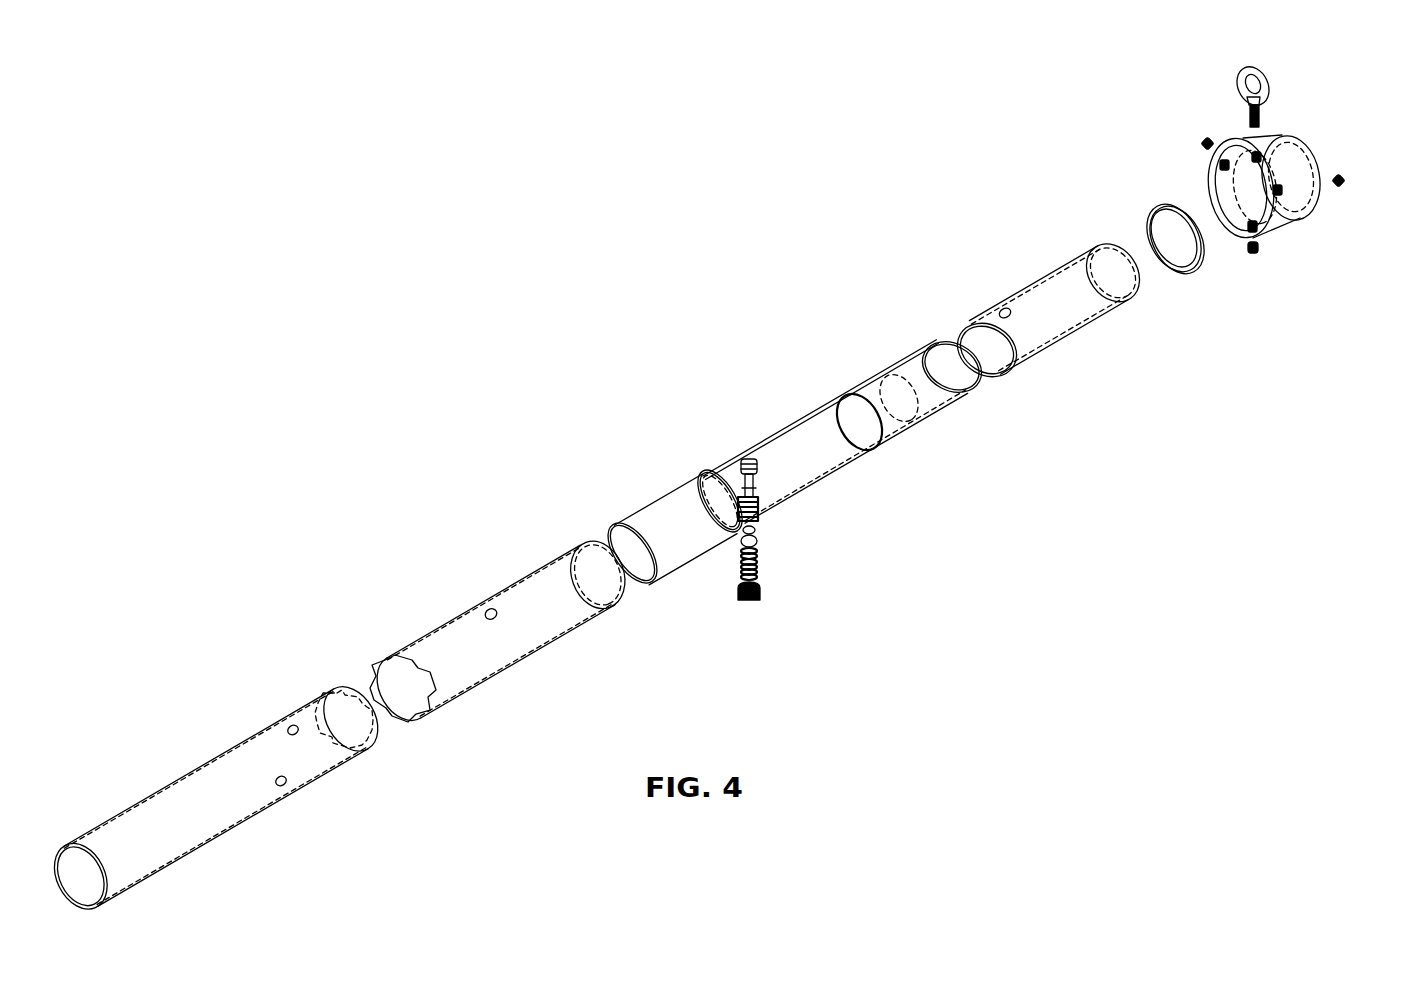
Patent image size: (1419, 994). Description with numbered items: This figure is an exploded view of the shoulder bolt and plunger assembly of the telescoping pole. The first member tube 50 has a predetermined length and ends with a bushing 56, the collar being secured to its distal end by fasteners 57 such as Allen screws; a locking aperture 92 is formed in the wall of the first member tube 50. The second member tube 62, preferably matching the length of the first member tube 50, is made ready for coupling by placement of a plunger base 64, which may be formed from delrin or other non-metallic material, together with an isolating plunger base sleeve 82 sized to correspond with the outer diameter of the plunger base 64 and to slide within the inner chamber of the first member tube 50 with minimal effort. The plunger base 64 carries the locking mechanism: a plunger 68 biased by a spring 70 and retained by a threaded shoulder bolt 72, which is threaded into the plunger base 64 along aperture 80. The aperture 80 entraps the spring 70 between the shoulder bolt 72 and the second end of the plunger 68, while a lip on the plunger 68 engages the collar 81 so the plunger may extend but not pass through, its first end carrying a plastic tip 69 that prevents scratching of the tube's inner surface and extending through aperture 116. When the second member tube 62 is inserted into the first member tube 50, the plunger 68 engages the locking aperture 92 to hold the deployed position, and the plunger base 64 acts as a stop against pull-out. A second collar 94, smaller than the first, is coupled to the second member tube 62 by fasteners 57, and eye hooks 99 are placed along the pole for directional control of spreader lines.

The first member tube 50 is at (168, 808).
The locking aperture 92 is at (487, 610).
The plunger base 64 is at (662, 517).
The plunger base sleeve 82 is at (785, 432).
The second member tube 62 is at (1043, 330).
The aperture 116 is at (742, 458).
The collar 81 is at (753, 475).
The aperture 80 is at (755, 488).
The plastic tip 69 is at (758, 527).
The plunger 68 is at (758, 545).
The spring 70 is at (758, 567).
The threaded shoulder bolt 72 is at (758, 603).
The bushing 56 is at (1192, 270).
The second collar 94 is at (1290, 220).
The fasteners 57 is at (1203, 140).
The eye hooks 99 is at (1246, 94).